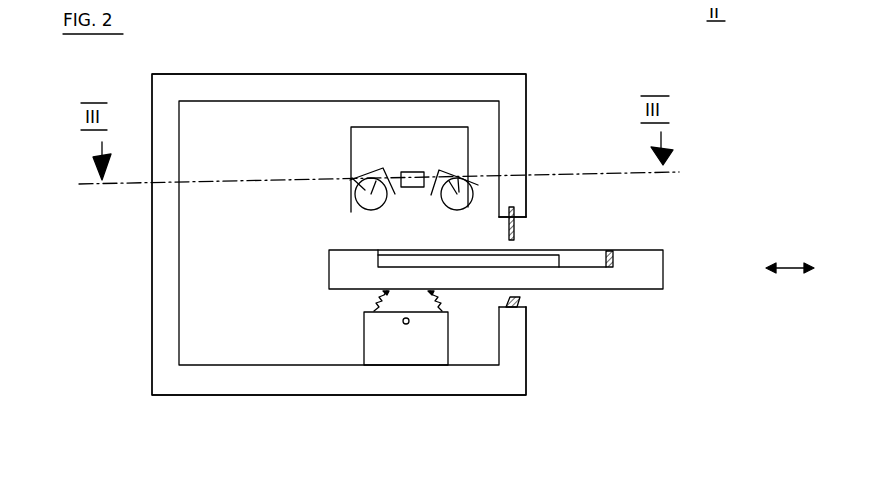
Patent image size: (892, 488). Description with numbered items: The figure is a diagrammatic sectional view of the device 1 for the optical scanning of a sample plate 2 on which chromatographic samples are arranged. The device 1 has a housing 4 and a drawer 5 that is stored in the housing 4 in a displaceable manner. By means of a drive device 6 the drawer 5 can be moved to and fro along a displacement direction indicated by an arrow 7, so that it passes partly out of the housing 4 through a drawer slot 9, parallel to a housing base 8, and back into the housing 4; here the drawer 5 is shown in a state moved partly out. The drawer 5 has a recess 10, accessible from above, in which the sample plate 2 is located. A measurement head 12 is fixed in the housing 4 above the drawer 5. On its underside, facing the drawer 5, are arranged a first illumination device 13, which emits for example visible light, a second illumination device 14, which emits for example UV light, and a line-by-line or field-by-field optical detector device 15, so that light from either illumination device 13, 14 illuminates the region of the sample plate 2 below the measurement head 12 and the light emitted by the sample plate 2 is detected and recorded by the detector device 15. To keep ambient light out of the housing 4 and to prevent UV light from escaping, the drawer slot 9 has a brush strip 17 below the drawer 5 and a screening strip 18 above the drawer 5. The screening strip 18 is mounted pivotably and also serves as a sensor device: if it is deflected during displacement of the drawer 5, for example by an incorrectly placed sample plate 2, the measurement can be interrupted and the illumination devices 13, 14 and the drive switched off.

The device 1 is at (574, 87).
The sample plate 2 is at (542, 243).
The housing 4 is at (278, 84).
The drawer 5 is at (654, 272).
The drive device 6 is at (410, 342).
The arrow 7 is at (787, 263).
The housing base 8 is at (247, 391).
The drawer slot 9 is at (540, 226).
The recess 10 is at (600, 244).
The measurement head 12 is at (394, 138).
The first illumination device 13 is at (346, 180).
The second illumination device 14 is at (466, 178).
The detector device 15 is at (413, 170).
The brush strip 17 is at (520, 297).
The screening strip 18 is at (506, 230).